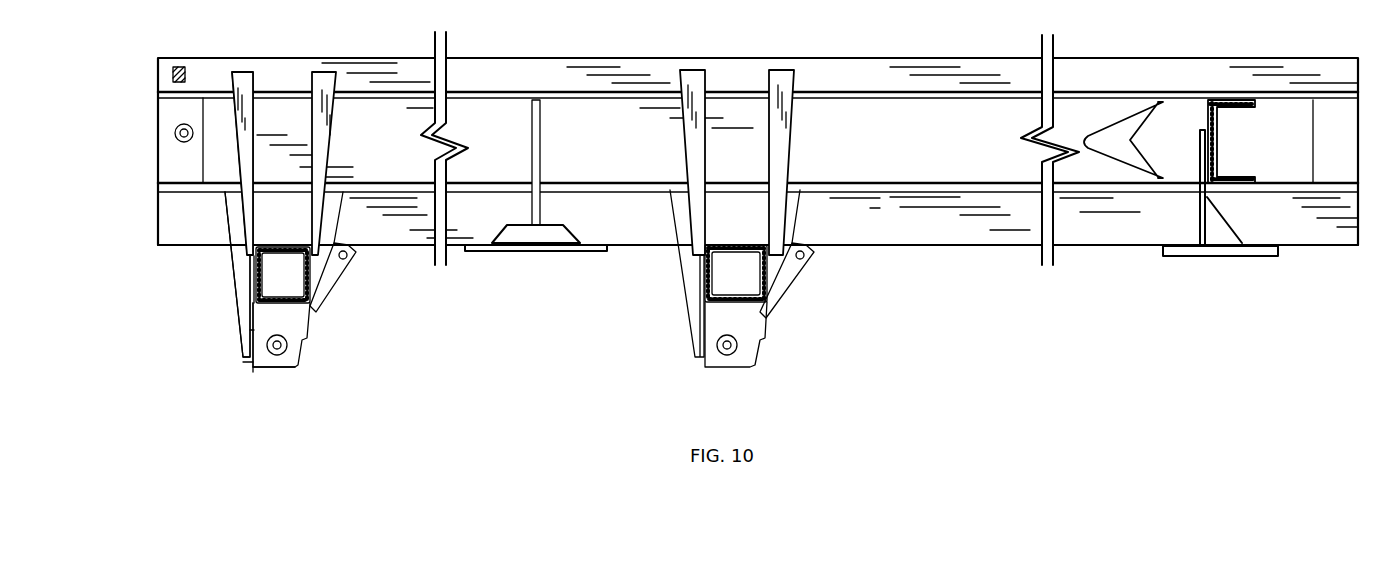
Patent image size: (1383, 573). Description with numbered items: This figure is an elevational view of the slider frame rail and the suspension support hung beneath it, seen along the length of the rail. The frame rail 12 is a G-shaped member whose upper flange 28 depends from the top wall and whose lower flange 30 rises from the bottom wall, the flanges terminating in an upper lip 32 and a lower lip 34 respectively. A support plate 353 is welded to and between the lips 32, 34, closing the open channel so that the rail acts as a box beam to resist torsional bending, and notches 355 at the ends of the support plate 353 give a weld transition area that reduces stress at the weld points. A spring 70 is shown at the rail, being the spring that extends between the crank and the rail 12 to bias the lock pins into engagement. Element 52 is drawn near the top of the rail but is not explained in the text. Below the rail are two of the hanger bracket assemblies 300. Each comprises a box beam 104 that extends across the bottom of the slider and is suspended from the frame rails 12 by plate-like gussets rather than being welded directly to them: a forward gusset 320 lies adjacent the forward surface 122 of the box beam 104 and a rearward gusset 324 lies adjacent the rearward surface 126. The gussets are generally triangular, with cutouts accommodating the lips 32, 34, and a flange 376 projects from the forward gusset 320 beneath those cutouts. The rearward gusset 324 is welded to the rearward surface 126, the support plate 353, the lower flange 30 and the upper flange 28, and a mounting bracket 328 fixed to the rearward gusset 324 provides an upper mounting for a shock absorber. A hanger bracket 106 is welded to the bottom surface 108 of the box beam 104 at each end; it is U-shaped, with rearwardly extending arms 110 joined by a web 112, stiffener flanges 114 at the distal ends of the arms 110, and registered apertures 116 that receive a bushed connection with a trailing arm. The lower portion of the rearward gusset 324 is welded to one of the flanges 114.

The frame rail 12 is at (156, 155).
The upper flange 28 is at (557, 75).
The lower flange 30 is at (218, 183).
The upper lip 32 is at (482, 97).
The lower lip 34 is at (386, 184).
The fastener 52 is at (178, 66).
The spring 70 is at (174, 133).
The box beam 104 is at (265, 247).
The hanger bracket 106 is at (254, 366).
The bottom surface 108 is at (262, 333).
The arms 110 is at (277, 365).
The web 112 is at (255, 372).
The stiffener flanges 114 is at (302, 352).
The apertures 116 is at (277, 358).
The forward surface 122 is at (263, 275).
The rearward surface 126 is at (318, 288).
The hanger bracket assembly 300 is at (195, 331).
The forward gusset 320 is at (240, 222).
The rearward gusset 324 is at (327, 164).
The mounting bracket 328 is at (332, 215).
The support plate 353 is at (1100, 110).
The notches 355 is at (1133, 140).
The flange 376 is at (242, 263).